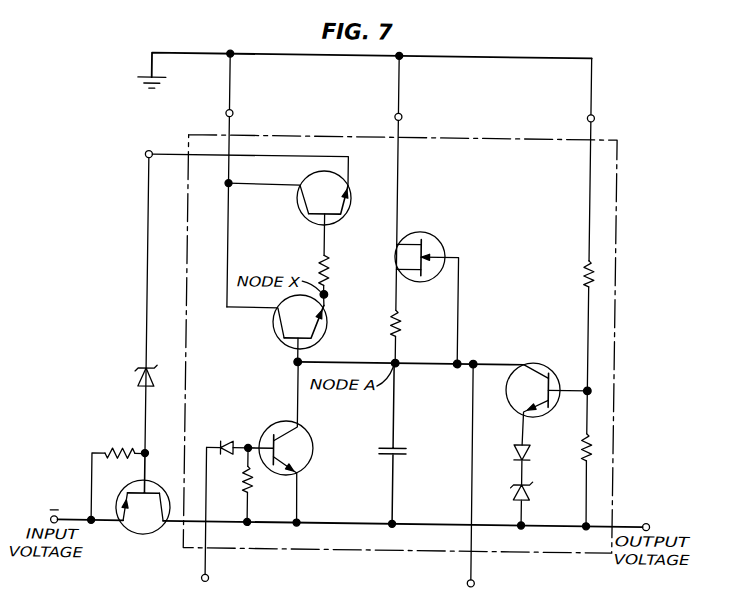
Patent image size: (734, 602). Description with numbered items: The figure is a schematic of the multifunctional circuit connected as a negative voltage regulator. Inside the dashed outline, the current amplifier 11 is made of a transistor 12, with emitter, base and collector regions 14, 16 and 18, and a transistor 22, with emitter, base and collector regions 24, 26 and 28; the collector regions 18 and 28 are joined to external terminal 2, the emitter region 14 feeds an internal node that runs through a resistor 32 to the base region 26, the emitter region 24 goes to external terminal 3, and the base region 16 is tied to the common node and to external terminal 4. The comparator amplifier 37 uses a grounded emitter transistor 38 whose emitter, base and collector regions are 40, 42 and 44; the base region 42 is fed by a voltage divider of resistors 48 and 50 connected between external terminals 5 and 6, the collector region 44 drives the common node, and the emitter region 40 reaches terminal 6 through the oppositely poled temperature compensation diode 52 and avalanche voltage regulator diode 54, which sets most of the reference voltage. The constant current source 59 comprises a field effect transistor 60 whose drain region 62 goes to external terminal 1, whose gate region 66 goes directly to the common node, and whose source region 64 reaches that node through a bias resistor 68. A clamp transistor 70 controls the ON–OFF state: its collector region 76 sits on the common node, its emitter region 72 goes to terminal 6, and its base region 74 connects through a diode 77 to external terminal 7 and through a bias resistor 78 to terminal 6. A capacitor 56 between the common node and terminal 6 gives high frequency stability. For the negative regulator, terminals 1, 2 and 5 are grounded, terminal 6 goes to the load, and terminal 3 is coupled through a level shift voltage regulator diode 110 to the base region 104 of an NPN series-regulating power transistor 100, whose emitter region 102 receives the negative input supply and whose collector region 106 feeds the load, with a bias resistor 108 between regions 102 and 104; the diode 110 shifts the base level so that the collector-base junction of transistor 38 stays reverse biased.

The external terminal 1 is at (403, 183).
The external terminal 2 is at (234, 181).
The external terminal 3 is at (244, 252).
The external terminal 4 is at (477, 480).
The external terminal 5 is at (597, 159).
The external terminal 6 is at (645, 518).
The external terminal 7 is at (211, 518).
The current amplifier 11 is at (198, 227).
The transistor 12 is at (315, 342).
The emitter region 14 is at (328, 319).
The base region 16 is at (296, 354).
The collector region 18 is at (277, 323).
The transistor 22 is at (337, 216).
The emitter region 24 is at (350, 198).
The base region 26 is at (319, 240).
The collector region 28 is at (303, 203).
The resistor 32 is at (330, 271).
The comparator amplifier 37 is at (539, 316).
The grounded emitter transistor 38 is at (553, 372).
The emitter region 40 is at (520, 411).
The base region 42 is at (566, 390).
The collector region 44 is at (528, 364).
The resistor 48 is at (583, 269).
The resistor 50 is at (583, 452).
The temperature compensation diode 52 is at (516, 451).
The voltage regulator diode 54 is at (516, 490).
The capacitor 56 is at (384, 456).
The constant current source 59 is at (491, 276).
The field effect transistor 60 is at (432, 235).
The drain region 62 is at (397, 191).
The source region 64 is at (410, 279).
The gate region 66 is at (458, 252).
The bias resistor 68 is at (401, 324).
The clamp transistor 70 is at (278, 427).
The emitter region 72 is at (293, 471).
The base region 74 is at (249, 447).
The collector region 76 is at (312, 435).
The diode 77 is at (224, 444).
The bias resistor 78 is at (245, 488).
The series-regulating power transistor 100 is at (162, 494).
The emitter region 102 is at (126, 526).
The base region 104 is at (146, 471).
The collector region 106 is at (166, 527).
The bias resistor 108 is at (114, 452).
The level shift voltage regulator diode 110 is at (139, 383).